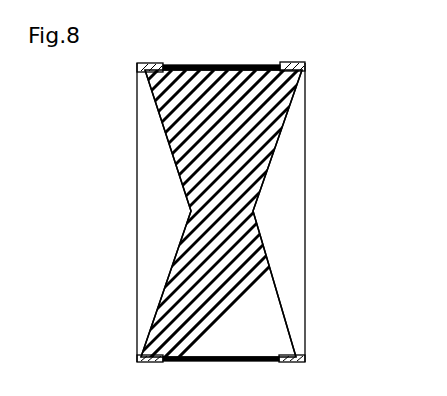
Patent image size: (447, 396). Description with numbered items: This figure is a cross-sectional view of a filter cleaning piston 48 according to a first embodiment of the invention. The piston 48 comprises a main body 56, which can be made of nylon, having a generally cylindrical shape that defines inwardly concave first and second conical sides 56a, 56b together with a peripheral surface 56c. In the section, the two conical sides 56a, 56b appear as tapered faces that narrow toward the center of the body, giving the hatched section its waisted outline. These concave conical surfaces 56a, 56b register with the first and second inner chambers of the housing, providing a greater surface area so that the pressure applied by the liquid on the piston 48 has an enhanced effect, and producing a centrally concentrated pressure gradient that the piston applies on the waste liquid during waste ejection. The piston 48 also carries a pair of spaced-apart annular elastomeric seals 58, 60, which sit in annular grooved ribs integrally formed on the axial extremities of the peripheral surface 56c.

The piston 48 is at (326, 235).
The main body 56 is at (314, 291).
The first conical side 56a is at (170, 151).
The second conical side 56b is at (264, 161).
The peripheral surface 56c is at (219, 66).
The annular elastomeric seal 58 is at (152, 66).
The annular elastomeric seal 60 is at (288, 63).